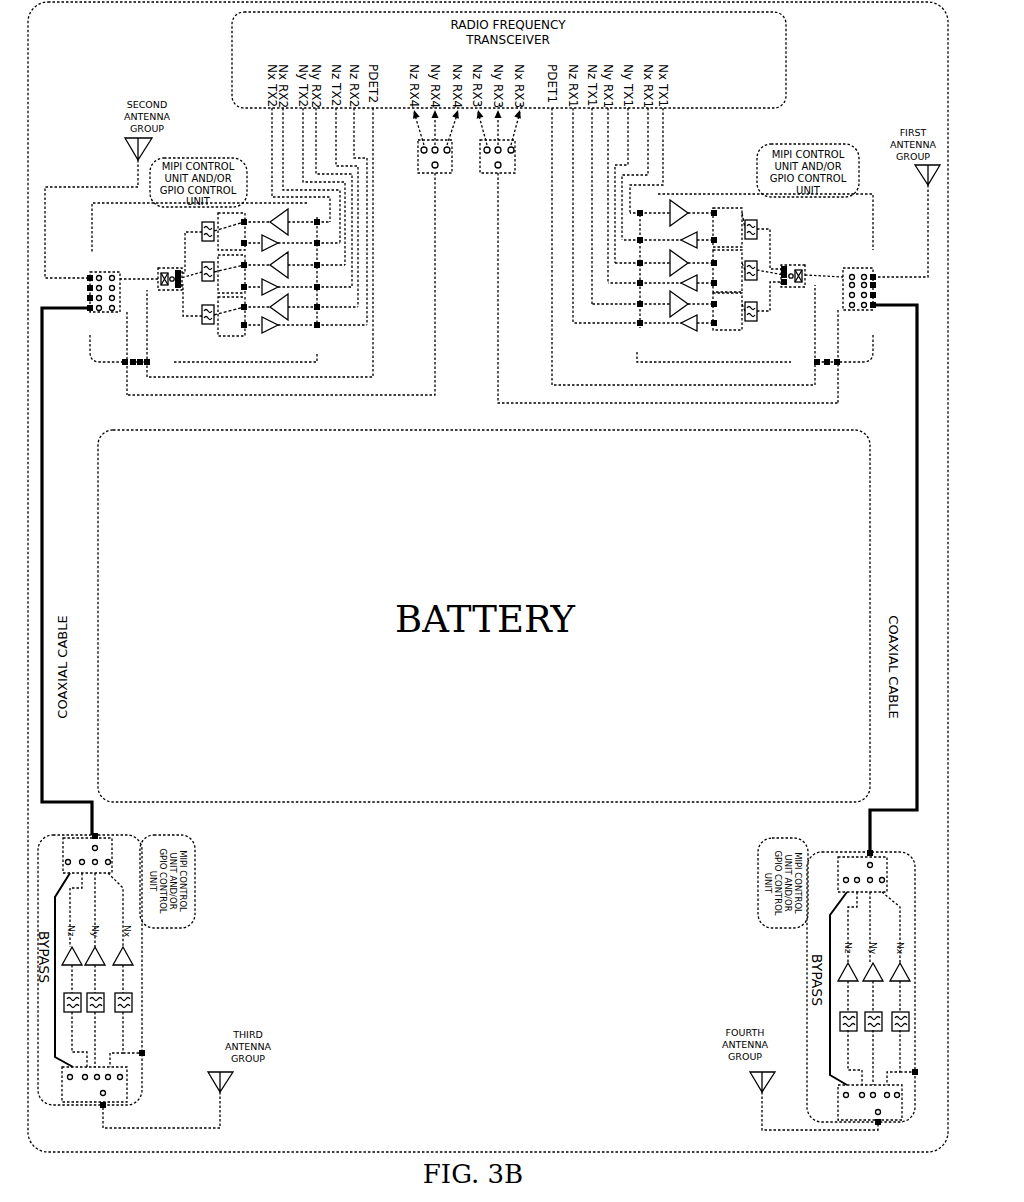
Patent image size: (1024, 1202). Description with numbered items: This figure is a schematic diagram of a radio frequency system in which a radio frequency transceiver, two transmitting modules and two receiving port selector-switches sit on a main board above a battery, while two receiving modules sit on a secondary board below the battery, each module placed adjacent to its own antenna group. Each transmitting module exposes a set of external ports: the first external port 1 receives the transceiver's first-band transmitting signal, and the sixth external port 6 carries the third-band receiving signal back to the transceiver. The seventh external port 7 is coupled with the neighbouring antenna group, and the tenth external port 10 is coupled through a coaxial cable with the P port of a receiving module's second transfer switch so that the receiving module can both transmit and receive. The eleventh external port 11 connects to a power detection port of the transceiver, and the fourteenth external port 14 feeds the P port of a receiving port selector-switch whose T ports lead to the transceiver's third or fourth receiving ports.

The first external port 1 is at (480, 261).
The sixth external port 6 is at (482, 345).
The seventh external port 7 is at (475, 326).
The tenth external port 10 is at (479, 336).
The eleventh external port 11 is at (481, 317).
The fourteenth external port 14 is at (481, 373).